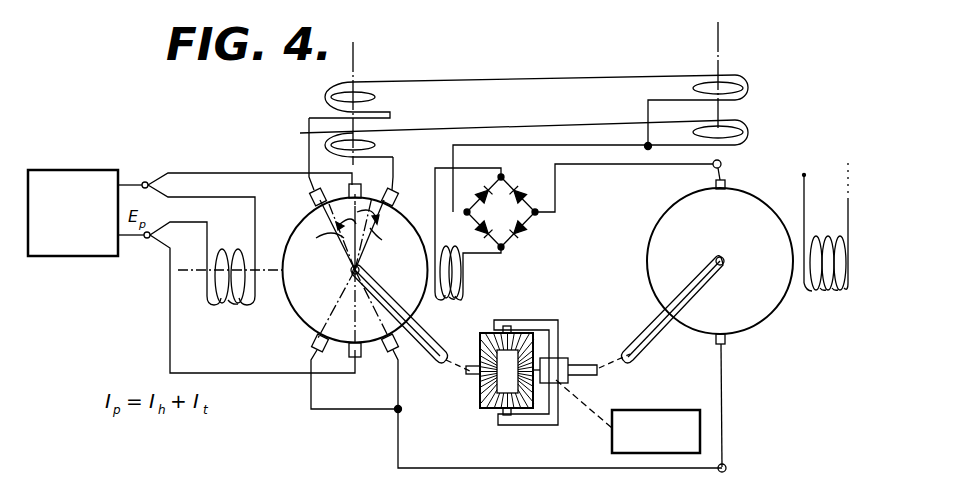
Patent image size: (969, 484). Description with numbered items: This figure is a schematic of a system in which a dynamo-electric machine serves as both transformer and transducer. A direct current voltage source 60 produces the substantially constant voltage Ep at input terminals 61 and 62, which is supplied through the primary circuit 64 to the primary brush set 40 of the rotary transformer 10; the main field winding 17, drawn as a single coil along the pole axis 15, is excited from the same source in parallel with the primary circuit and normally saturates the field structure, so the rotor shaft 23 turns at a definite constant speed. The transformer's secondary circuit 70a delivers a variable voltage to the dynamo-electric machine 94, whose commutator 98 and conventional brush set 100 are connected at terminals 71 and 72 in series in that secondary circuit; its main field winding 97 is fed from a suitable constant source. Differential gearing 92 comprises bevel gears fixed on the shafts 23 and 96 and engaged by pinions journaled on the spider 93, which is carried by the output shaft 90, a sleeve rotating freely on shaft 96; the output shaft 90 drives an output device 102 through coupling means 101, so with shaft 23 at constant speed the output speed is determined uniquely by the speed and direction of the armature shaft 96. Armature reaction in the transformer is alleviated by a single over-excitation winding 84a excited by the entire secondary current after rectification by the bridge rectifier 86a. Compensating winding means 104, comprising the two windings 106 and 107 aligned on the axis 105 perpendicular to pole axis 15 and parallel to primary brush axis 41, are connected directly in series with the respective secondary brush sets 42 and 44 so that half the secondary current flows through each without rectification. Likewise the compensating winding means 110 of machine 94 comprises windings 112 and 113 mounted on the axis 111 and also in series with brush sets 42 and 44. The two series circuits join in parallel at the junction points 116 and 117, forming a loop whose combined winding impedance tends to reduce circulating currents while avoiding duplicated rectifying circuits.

The rotary transformer 10 is at (294, 332).
The pole axis 15 is at (192, 270).
The main field winding 17 is at (238, 306).
The rotor shaft 23 is at (428, 342).
The primary brush set 40 is at (374, 184).
The primary brush axis 41 is at (347, 302).
The secondary brush set 42 is at (306, 210).
The secondary brush set 44 is at (404, 190).
The voltage source 60 is at (93, 155).
The input terminal 61 is at (146, 182).
The input terminal 62 is at (146, 238).
The primary circuit 64 is at (274, 168).
The secondary circuit 70a is at (742, 420).
The terminal 71 is at (712, 166).
The terminal 72 is at (727, 468).
The over-excitation winding 84a is at (462, 292).
The bridge rectifier 86a is at (540, 230).
The output shaft 90 is at (560, 352).
The differential gearing 92 is at (476, 412).
The spider 93 is at (528, 318).
The dynamo-electric machine 94 is at (715, 313).
The armature shaft 96 is at (652, 342).
The main field winding 97 is at (848, 283).
The commutator 98 is at (772, 326).
The brush set 100 is at (730, 184).
The coupling means 101 is at (584, 410).
The output device 102 is at (644, 410).
The compensating winding means 104 is at (496, 100).
The axis 105 is at (357, 55).
The compensating winding 106 is at (326, 93).
The compensating winding 107 is at (300, 133).
The compensating winding means 110 is at (640, 117).
The axis 111 is at (720, 50).
The compensating winding 112 is at (748, 86).
The compensating winding 113 is at (748, 141).
The junction point 116 is at (646, 146).
The junction point 117 is at (394, 413).